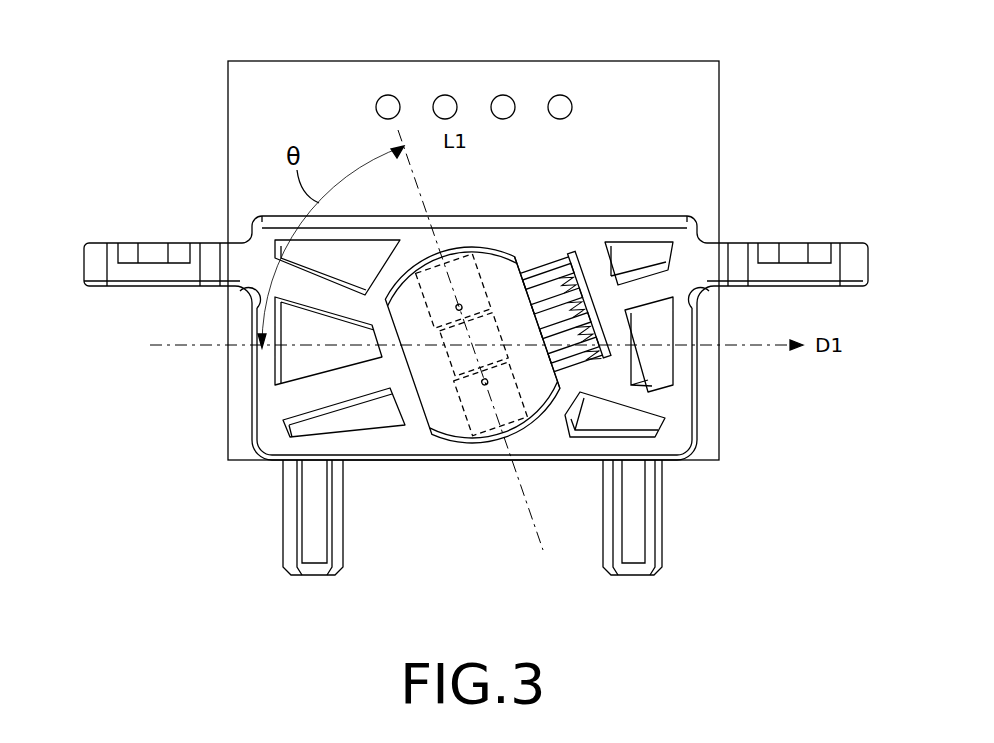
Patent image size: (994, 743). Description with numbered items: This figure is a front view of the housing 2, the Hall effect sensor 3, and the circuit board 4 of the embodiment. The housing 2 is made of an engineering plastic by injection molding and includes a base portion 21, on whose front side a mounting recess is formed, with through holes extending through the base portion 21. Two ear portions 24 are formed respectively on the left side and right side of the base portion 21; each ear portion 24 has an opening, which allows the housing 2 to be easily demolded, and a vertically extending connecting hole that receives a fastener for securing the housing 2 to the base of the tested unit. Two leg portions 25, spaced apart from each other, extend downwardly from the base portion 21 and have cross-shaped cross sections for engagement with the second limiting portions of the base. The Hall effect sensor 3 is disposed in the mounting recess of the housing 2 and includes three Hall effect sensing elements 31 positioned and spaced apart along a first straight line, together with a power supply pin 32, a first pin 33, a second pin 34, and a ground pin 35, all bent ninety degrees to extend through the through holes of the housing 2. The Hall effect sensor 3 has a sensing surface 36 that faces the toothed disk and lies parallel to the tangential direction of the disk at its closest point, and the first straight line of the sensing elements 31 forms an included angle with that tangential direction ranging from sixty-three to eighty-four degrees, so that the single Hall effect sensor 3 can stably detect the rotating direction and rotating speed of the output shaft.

The housing 2 is at (584, 212).
The Hall effect sensor 3 is at (478, 434).
The circuit board 4 is at (679, 85).
The base portion 21 is at (529, 238).
The ear portions 24 is at (95, 270).
The leg portions 25 is at (340, 553).
The Hall effect sensing elements 31 is at (434, 302).
The power supply pin 32 is at (597, 363).
The first pin 33 is at (568, 292).
The second pin 34 is at (580, 324).
The ground pin 35 is at (553, 263).
The sensing surface 36 is at (528, 407).